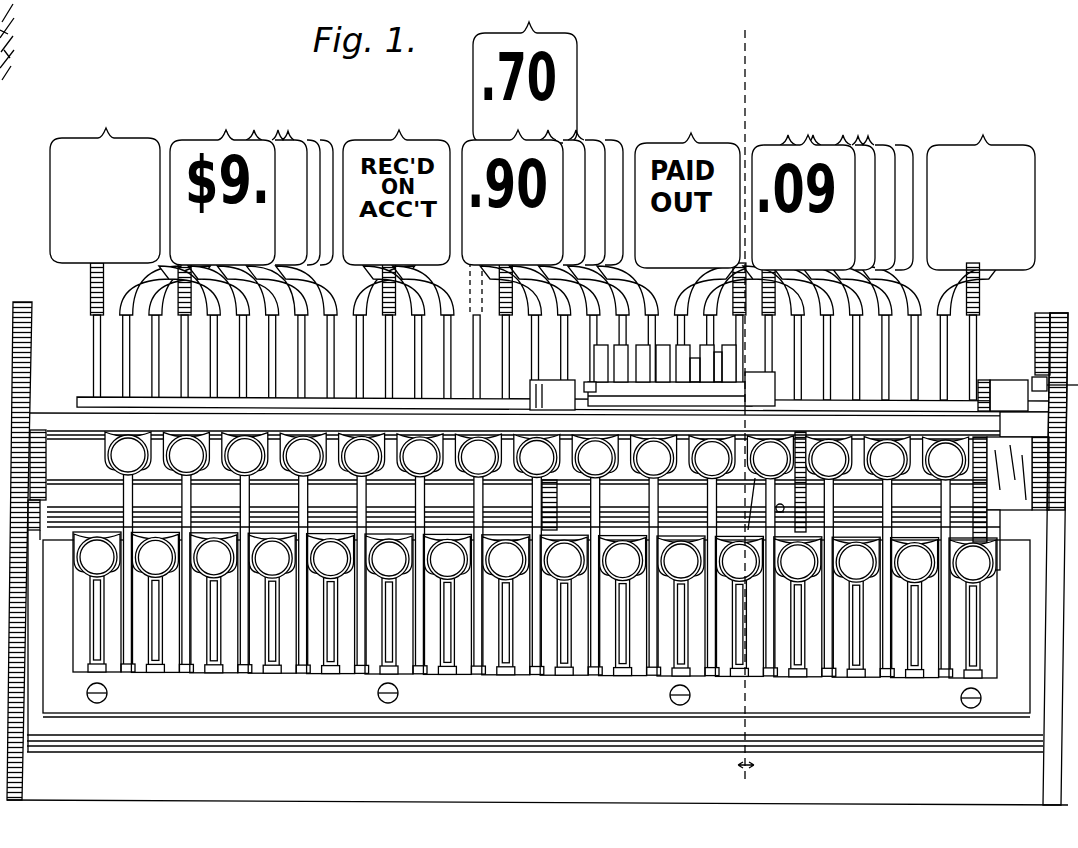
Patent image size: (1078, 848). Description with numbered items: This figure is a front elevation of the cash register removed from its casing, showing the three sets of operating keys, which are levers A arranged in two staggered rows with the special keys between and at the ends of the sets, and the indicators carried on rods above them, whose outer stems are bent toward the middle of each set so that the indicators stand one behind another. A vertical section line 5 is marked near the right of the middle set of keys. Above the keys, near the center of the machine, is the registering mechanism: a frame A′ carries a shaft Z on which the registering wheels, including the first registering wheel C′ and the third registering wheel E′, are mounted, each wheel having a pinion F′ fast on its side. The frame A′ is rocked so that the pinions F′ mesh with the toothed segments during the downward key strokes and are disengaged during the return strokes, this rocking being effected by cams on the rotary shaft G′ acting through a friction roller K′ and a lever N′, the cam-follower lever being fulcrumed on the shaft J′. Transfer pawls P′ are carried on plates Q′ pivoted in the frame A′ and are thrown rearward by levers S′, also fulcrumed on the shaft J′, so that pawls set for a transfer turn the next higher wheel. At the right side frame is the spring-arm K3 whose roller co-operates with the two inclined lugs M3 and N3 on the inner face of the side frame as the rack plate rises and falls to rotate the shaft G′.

The third registering wheel E′ is at (50, 233).
The pinion F′ is at (97, 352).
The rotary shaft G′ is at (318, 512).
The lever S′ is at (590, 492).
The plate Q′ is at (700, 407).
The frame A′ is at (722, 407).
The transfer pawl P′ is at (626, 348).
The first registering wheel C′ is at (728, 350).
The shaft Z is at (766, 372).
The lever N′ is at (750, 500).
The friction roller K′ is at (766, 498).
The lever A is at (830, 495).
The shaft J′ is at (905, 512).
The inclined lug N3 is at (1042, 320).
The inclined lug M3 is at (1032, 378).
The spring-arm K3 is at (1028, 395).
The section line 5 is at (746, 404).